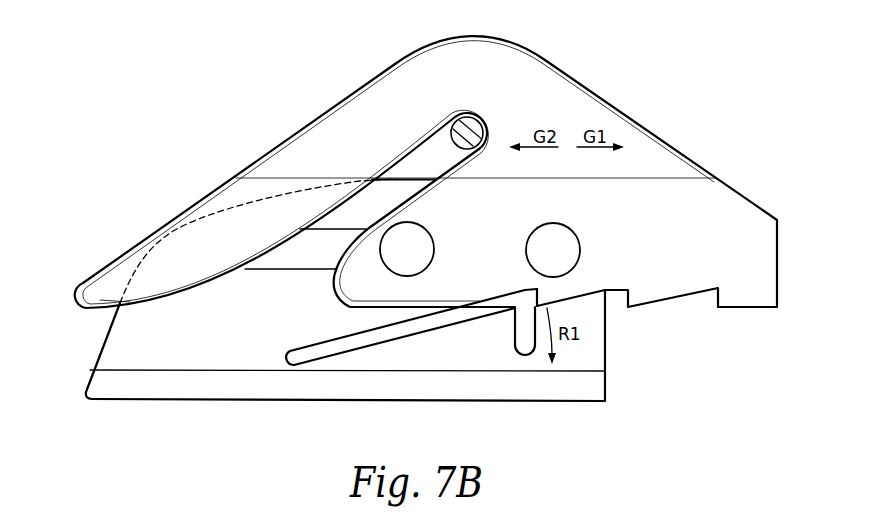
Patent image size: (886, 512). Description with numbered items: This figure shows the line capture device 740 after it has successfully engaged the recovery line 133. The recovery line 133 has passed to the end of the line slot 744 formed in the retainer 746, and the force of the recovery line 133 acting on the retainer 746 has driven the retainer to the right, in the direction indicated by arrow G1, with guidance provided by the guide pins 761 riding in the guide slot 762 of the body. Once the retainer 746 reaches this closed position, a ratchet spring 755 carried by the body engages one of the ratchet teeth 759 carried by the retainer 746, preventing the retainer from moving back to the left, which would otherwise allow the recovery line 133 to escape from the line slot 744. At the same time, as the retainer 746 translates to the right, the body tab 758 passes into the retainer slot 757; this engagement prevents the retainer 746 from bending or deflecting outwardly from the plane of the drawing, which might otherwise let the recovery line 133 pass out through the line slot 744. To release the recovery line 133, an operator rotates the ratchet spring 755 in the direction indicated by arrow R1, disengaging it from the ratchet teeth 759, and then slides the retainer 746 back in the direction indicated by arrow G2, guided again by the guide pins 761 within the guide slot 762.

The recovery line 133 is at (453, 131).
The line capture device 740 is at (705, 113).
The line slot 744 is at (279, 290).
The retainer 746 is at (669, 201).
The ratchet spring 755 is at (367, 343).
The retainer slot 757 is at (158, 293).
The body tab 758 is at (133, 277).
The ratchet teeth 759 is at (628, 306).
The guide pins 761 is at (581, 248).
The guide slot 762 is at (298, 250).